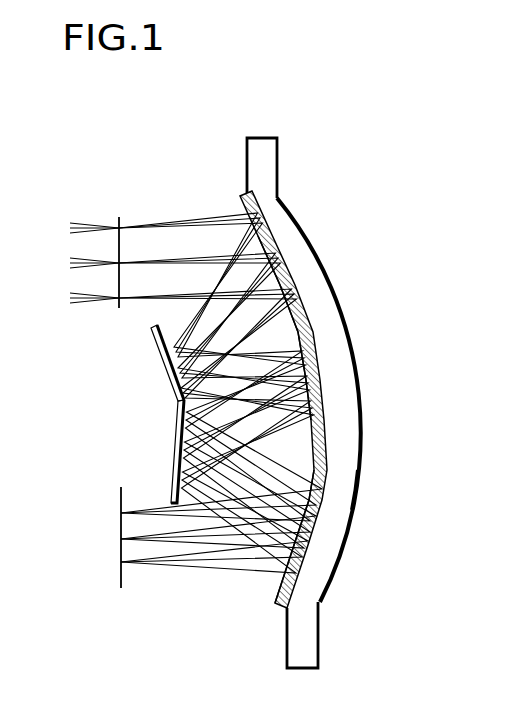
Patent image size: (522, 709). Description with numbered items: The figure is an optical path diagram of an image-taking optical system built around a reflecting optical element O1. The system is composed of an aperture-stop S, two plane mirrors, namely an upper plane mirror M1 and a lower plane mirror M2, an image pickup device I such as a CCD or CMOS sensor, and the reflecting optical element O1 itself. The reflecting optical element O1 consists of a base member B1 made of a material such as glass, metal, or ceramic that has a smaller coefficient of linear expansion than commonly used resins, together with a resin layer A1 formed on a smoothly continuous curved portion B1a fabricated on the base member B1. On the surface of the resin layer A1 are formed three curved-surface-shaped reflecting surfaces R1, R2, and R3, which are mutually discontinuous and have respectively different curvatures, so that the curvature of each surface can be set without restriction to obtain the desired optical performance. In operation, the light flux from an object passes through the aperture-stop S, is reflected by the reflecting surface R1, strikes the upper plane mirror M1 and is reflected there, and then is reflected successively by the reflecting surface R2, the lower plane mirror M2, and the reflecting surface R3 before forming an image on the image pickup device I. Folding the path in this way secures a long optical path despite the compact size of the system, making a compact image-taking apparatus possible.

The aperture-stop S is at (119, 217).
The image pickup device I is at (121, 548).
The upper plane mirror M1 is at (170, 352).
The lower plane mirror M2 is at (178, 445).
The reflecting optical element O1 is at (360, 135).
The resin layer A1 is at (280, 223).
The reflecting surface R1 is at (305, 313).
The reflecting surface R2 is at (325, 374).
The reflecting surface R3 is at (292, 570).
The base member B1 is at (333, 458).
The smoothly continuous curved portion B1a is at (327, 486).